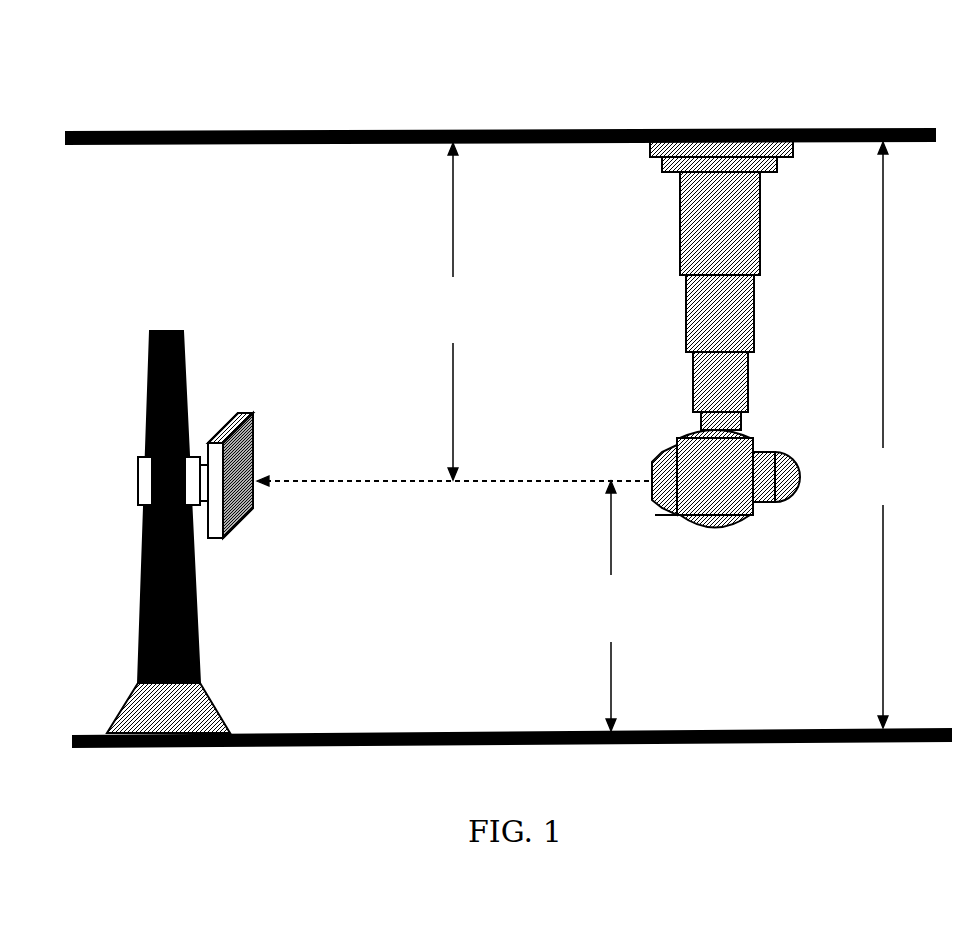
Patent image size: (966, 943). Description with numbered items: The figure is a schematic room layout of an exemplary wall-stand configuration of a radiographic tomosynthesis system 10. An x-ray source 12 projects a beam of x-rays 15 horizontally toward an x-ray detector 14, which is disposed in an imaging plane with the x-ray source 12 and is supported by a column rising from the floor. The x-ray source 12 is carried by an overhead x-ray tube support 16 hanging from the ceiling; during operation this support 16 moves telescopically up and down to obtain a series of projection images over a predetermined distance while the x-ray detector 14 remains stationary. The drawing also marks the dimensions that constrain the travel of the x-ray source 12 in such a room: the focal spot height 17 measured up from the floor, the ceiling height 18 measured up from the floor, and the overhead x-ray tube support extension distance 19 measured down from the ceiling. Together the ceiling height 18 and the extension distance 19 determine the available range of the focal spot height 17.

The radiographic tomosynthesis system 10 is at (910, 106).
The x-ray source 12 is at (741, 540).
The x-ray detector 14 is at (245, 540).
The beam of x-rays 15 is at (322, 483).
The overhead x-ray tube support 16 is at (737, 237).
The focal spot height 17 is at (613, 606).
The ceiling height 18 is at (886, 435).
The overhead x-ray tube support extension distance 19 is at (458, 311).